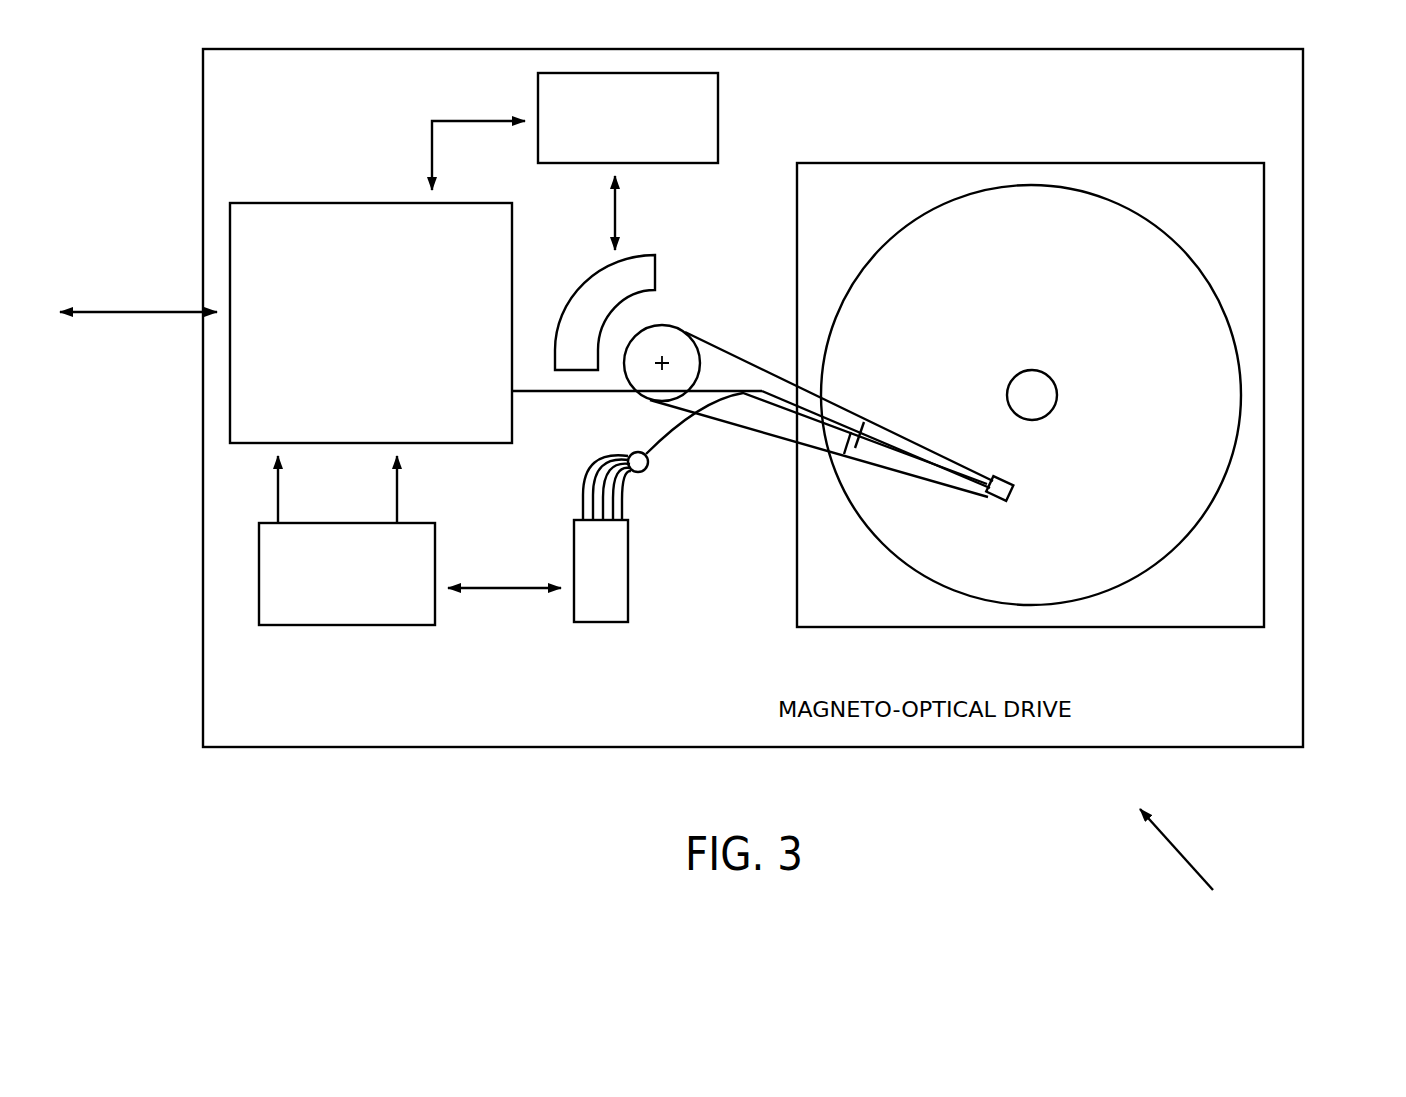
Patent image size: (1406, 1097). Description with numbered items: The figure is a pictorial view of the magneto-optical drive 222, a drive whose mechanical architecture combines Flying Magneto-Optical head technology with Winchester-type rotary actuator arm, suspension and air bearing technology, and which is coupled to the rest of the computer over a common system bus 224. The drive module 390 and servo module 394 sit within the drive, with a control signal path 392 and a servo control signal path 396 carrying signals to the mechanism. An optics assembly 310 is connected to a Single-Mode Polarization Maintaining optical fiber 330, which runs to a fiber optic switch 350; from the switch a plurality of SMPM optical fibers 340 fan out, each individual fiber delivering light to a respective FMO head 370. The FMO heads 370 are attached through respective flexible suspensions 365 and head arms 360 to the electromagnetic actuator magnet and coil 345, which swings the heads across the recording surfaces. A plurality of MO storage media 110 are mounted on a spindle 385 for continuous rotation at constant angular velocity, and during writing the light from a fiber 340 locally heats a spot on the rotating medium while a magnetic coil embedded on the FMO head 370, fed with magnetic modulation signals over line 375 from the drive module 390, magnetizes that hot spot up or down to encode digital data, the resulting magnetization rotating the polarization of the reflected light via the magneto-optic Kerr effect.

The MO storage media 110 is at (1178, 327).
The magneto-optical drive 222 is at (1198, 861).
The common system bus 224 is at (108, 313).
The optics assembly 310 is at (310, 610).
The Single-Mode Polarization Maintaining optical fiber 330 is at (510, 590).
The SMPM optical fibers 340 is at (627, 495).
The actuator magnet and coil 345 is at (640, 278).
The fiber optic switch 350 is at (617, 603).
The head arms 360 is at (845, 417).
The suspensions 365 is at (853, 438).
The FMO heads 370 is at (1003, 495).
The line 375 is at (593, 391).
The spindle 385 is at (1037, 398).
The drive module 390 is at (242, 203).
The control signal path 392 is at (460, 121).
The servo module 394 is at (718, 122).
The servo control signal path 396 is at (616, 223).